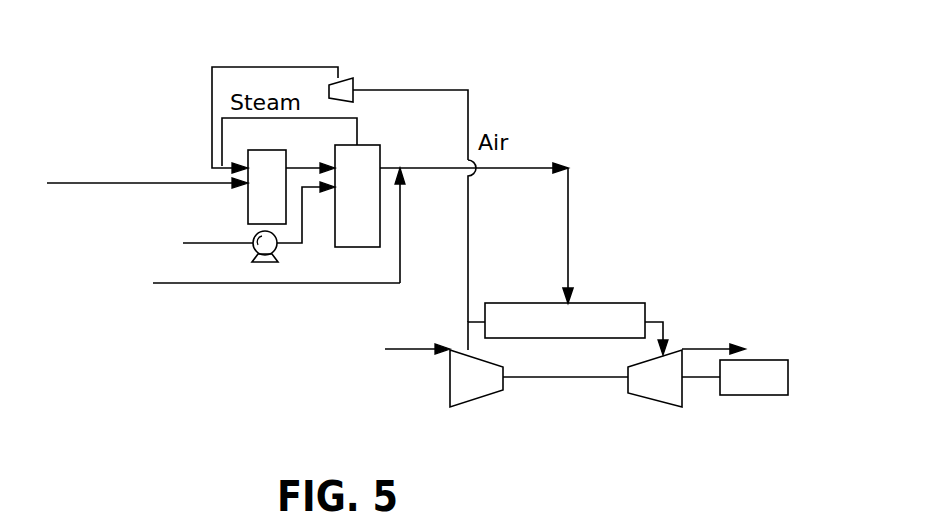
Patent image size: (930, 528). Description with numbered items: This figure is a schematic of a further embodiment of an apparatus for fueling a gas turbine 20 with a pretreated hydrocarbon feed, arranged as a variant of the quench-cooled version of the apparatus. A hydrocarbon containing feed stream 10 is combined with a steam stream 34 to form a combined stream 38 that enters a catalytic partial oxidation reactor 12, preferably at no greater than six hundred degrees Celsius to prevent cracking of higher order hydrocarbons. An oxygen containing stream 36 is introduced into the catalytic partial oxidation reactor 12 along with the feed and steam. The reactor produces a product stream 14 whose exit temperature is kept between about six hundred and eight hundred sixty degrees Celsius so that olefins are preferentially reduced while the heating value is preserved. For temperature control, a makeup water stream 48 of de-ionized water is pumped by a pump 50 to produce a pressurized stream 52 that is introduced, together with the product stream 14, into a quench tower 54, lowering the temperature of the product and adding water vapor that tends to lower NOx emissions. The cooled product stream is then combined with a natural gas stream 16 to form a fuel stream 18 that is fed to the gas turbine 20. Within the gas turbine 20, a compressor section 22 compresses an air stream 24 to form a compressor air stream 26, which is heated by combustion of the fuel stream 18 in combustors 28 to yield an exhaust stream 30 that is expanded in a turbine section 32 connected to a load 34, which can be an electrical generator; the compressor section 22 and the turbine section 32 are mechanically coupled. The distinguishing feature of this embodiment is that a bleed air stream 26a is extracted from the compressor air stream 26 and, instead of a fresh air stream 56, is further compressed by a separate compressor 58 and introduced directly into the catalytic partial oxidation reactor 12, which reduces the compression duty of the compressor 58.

The hydrocarbon containing feed stream 10 is at (78, 185).
The catalytic partial oxidation reactor 12 is at (268, 150).
The product stream 14 is at (303, 166).
The natural gas stream 16 is at (314, 285).
The fuel stream 18 is at (428, 170).
The gas turbine 20 is at (604, 208).
The compressor section 22 is at (488, 380).
The air stream 24 is at (412, 352).
The compressor air stream 26 is at (466, 324).
The bleed air stream 26a is at (469, 270).
The combustors 28 is at (585, 303).
The exhaust stream 30 is at (665, 322).
The turbine section 32 is at (650, 380).
The load 34 is at (740, 395).
The oxygen containing stream 36 is at (212, 78).
The combined stream 38 is at (212, 178).
The makeup water stream 48 is at (207, 243).
The pump 50 is at (254, 238).
The pressurized stream 52 is at (302, 237).
The quench tower 54 is at (377, 223).
The air stream 56 is at (388, 89).
The compressor 58 is at (345, 80).